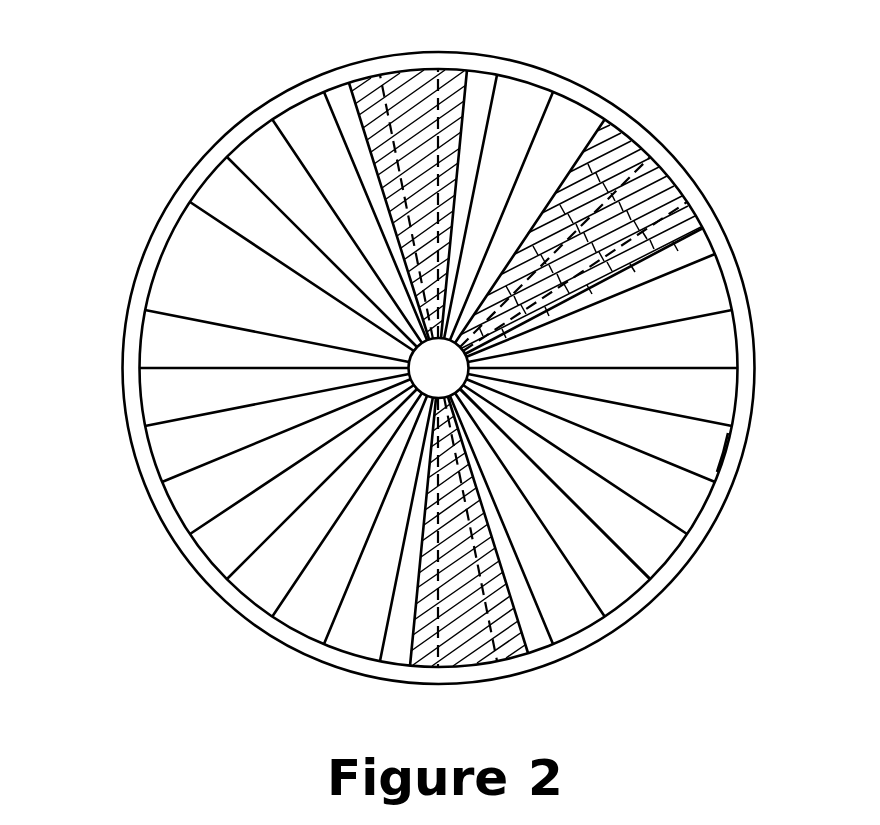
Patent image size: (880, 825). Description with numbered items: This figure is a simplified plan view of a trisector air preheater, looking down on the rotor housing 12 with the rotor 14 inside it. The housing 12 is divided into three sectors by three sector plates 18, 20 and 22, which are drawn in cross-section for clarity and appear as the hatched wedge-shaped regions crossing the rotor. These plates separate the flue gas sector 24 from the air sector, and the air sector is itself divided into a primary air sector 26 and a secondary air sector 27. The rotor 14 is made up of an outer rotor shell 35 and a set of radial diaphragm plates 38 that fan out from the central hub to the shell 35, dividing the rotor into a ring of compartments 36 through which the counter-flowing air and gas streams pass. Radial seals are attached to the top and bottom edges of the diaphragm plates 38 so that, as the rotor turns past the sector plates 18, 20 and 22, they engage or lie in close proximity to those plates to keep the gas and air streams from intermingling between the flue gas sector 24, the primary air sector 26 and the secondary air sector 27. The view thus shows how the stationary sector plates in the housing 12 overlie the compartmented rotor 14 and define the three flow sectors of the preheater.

The rotor housing 12 is at (124, 326).
The rotor 14 is at (708, 500).
The sector plate 18 is at (475, 656).
The sector plate 20 is at (393, 75).
The sector plate 22 is at (660, 193).
The flue gas sector 24 is at (178, 290).
The primary air sector 26 is at (572, 127).
The secondary air sector 27 is at (658, 552).
The shell 35 is at (733, 456).
The compartments 36 is at (712, 345).
The diaphragm plates 38 is at (185, 418).